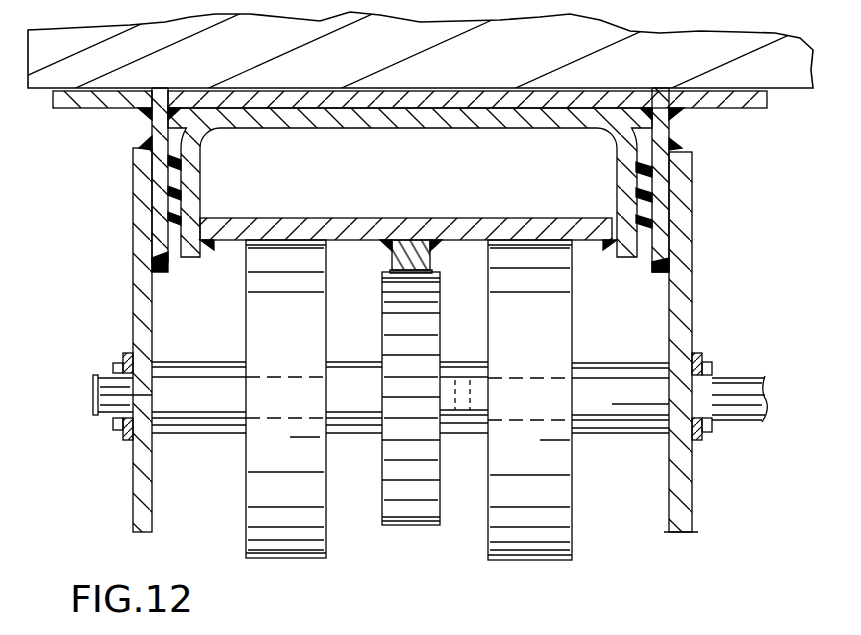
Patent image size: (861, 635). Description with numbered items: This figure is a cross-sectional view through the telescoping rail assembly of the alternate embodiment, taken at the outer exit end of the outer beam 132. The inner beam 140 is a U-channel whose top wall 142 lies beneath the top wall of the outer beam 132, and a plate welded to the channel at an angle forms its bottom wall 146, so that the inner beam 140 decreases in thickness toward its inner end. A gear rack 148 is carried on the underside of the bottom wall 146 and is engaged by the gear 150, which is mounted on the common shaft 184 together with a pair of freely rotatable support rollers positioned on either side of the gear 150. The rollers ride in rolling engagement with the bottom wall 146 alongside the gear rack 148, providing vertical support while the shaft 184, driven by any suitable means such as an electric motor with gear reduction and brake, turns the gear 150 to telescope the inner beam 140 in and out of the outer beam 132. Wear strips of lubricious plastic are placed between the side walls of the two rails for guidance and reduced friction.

The outer beam 132 is at (142, 131).
The inner beam 140 is at (408, 213).
The top wall 142 is at (497, 130).
The bottom wall 146 is at (313, 218).
The gear rack 148 is at (392, 258).
The gear 150 is at (420, 527).
The shaft 184 is at (93, 398).